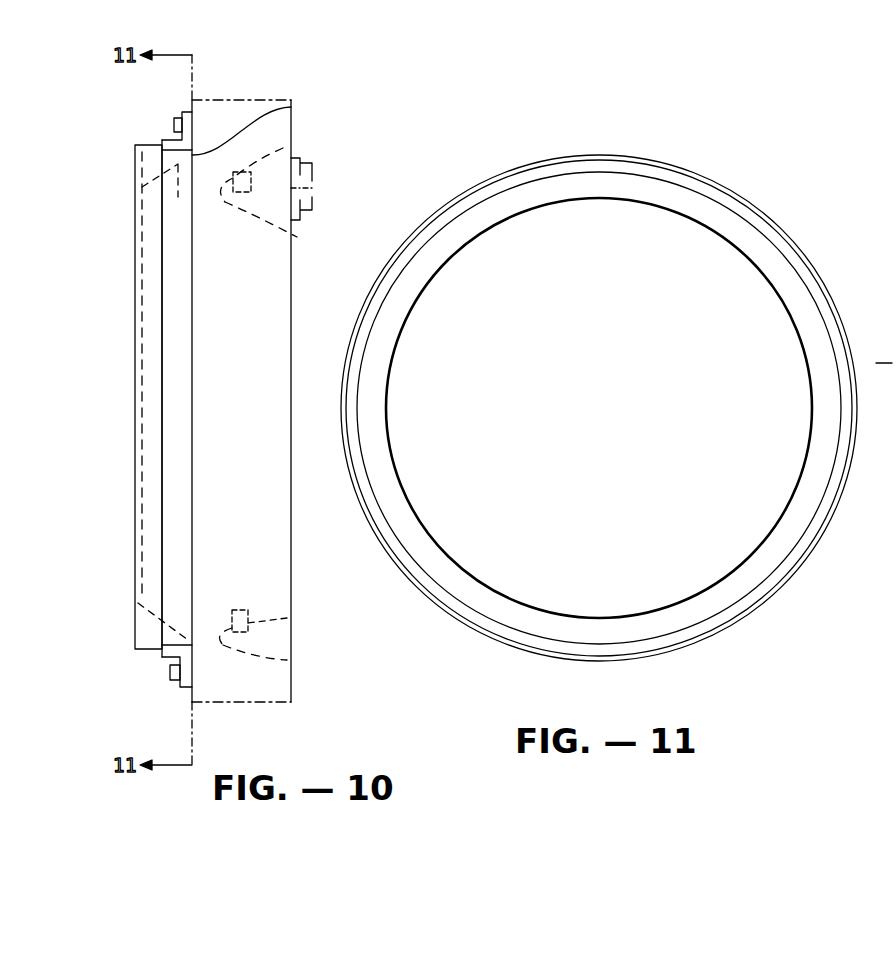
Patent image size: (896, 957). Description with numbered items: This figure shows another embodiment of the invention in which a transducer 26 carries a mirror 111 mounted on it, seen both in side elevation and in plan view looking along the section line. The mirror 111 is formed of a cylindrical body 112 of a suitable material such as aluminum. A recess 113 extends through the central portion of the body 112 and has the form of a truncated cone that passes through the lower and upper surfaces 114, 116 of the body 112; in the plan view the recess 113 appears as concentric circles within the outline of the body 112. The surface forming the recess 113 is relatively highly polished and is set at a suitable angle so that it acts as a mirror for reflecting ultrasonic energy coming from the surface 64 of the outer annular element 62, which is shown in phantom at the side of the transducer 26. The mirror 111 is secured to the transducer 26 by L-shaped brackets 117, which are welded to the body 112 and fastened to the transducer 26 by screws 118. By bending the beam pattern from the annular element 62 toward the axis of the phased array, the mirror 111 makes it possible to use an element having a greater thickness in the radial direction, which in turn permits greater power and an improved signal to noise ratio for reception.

In FIG. 10, the transducer 26 is at (278, 721).
In FIG. 10, the outer annular element 62 is at (320, 615).
In FIG. 10, the surface 64 is at (315, 668).
In FIG. 10, the mirror 111 is at (110, 144).
In FIG. 10, the cylindrical body 112 is at (140, 161).
In FIG. 10, the recess 113 is at (142, 212).
In FIG. 11, the recess 113 is at (700, 202).
In FIG. 10, the lower surface 114 is at (135, 632).
In FIG. 10, the upper surface 116 is at (291, 107).
In FIG. 11, the upper surface 116 is at (588, 162).
In FIG. 10, the L-shaped brackets 117 is at (190, 110).
In FIG. 10, the screws 118 is at (174, 126).